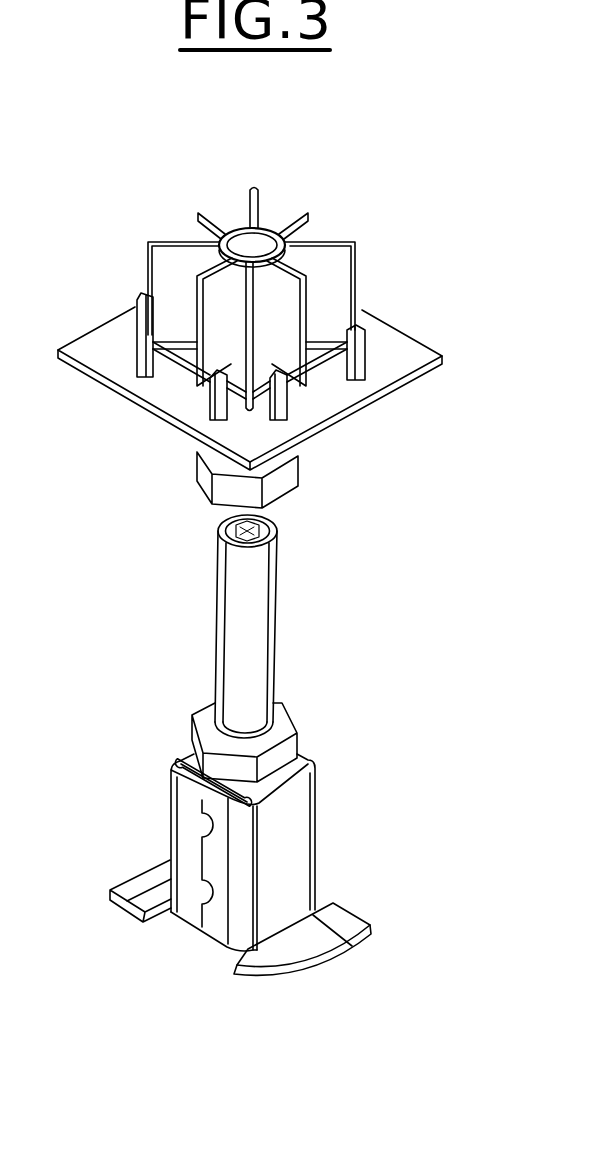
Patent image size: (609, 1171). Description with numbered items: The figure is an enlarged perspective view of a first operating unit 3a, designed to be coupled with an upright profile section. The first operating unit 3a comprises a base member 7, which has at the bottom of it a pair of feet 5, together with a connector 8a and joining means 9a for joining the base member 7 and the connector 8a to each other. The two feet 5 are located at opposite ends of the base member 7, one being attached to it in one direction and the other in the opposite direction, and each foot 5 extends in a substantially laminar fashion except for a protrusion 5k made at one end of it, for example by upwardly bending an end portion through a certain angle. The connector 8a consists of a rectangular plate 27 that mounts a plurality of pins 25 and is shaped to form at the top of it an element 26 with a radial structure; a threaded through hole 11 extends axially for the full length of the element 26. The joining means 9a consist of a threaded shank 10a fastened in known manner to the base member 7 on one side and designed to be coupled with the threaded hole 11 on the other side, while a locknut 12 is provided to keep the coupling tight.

The first operating unit 3a is at (244, 816).
The feet 5 is at (244, 930).
The protrusion 5k is at (340, 920).
The base member 7 is at (287, 842).
The connector 8a is at (233, 300).
The joining means 9a is at (249, 603).
The threaded shank 10a is at (232, 633).
The threaded through hole 11 is at (245, 250).
The locknut 12 is at (288, 477).
The pins 25 is at (353, 360).
The element with radial structure 26 is at (152, 232).
The rectangular plate 27 is at (82, 347).